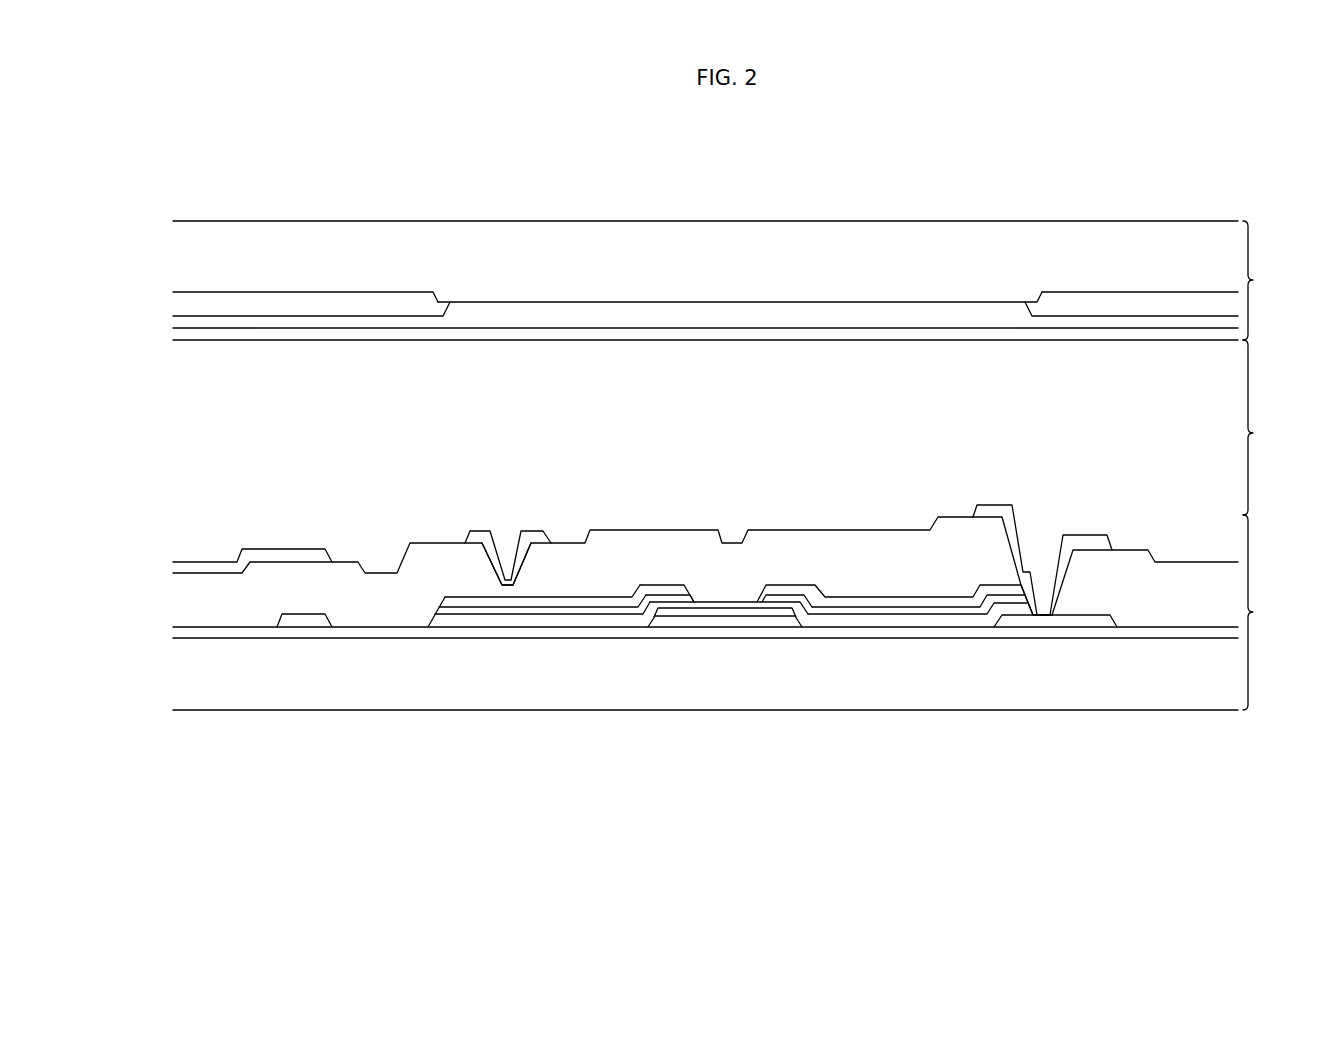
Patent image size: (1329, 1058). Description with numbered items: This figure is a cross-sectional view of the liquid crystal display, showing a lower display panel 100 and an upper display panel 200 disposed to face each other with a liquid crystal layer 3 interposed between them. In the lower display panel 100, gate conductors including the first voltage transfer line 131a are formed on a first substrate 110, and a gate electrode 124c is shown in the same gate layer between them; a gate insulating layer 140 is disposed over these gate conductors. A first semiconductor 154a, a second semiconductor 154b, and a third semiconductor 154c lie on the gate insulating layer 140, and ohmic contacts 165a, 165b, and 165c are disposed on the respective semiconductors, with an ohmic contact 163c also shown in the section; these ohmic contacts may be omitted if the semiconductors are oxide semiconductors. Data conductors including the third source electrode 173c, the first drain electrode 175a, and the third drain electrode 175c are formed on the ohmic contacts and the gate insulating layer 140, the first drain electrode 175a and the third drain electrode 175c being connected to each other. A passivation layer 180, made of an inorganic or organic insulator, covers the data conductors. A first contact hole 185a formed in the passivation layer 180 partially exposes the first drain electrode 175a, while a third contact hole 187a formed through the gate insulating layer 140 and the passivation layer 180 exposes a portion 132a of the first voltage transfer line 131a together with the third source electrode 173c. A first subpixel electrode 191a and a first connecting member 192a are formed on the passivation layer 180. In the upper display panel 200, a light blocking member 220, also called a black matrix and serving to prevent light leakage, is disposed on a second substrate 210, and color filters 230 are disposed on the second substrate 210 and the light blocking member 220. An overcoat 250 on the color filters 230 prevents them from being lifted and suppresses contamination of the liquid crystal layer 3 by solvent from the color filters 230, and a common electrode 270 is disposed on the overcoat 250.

The liquid crystal layer 3 is at (1260, 427).
The lower display panel 100 is at (1268, 612).
The first substrate 110 is at (1107, 680).
The gate electrode 124c is at (725, 630).
The first voltage transfer line 131a is at (297, 620).
The portion of the first voltage transfer line 132a is at (1037, 630).
The gate insulating layer 140 is at (1183, 641).
The first semiconductor 154a is at (458, 625).
The second semiconductor 154b is at (988, 630).
The third semiconductor 154c is at (783, 603).
The ohmic contact 163c is at (848, 610).
The ohmic contact 165a is at (524, 612).
The ohmic contact 165b is at (955, 612).
The ohmic contact 165c is at (672, 605).
The third source electrode 173c is at (855, 600).
The first drain electrode 175a is at (455, 595).
The third drain electrode 175c is at (655, 592).
The passivation layer 180 is at (797, 550).
The first contact hole 185a is at (497, 565).
The third contact hole 187a is at (1057, 548).
The first subpixel electrode 191a is at (268, 553).
The first connecting member 192a is at (1003, 512).
The upper display panel 200 is at (733, 280).
The second substrate 210 is at (928, 250).
The light blocking member 220 is at (698, 300).
The color filters 230 is at (375, 300).
The overcoat 250 is at (490, 318).
The common electrode 270 is at (600, 330).